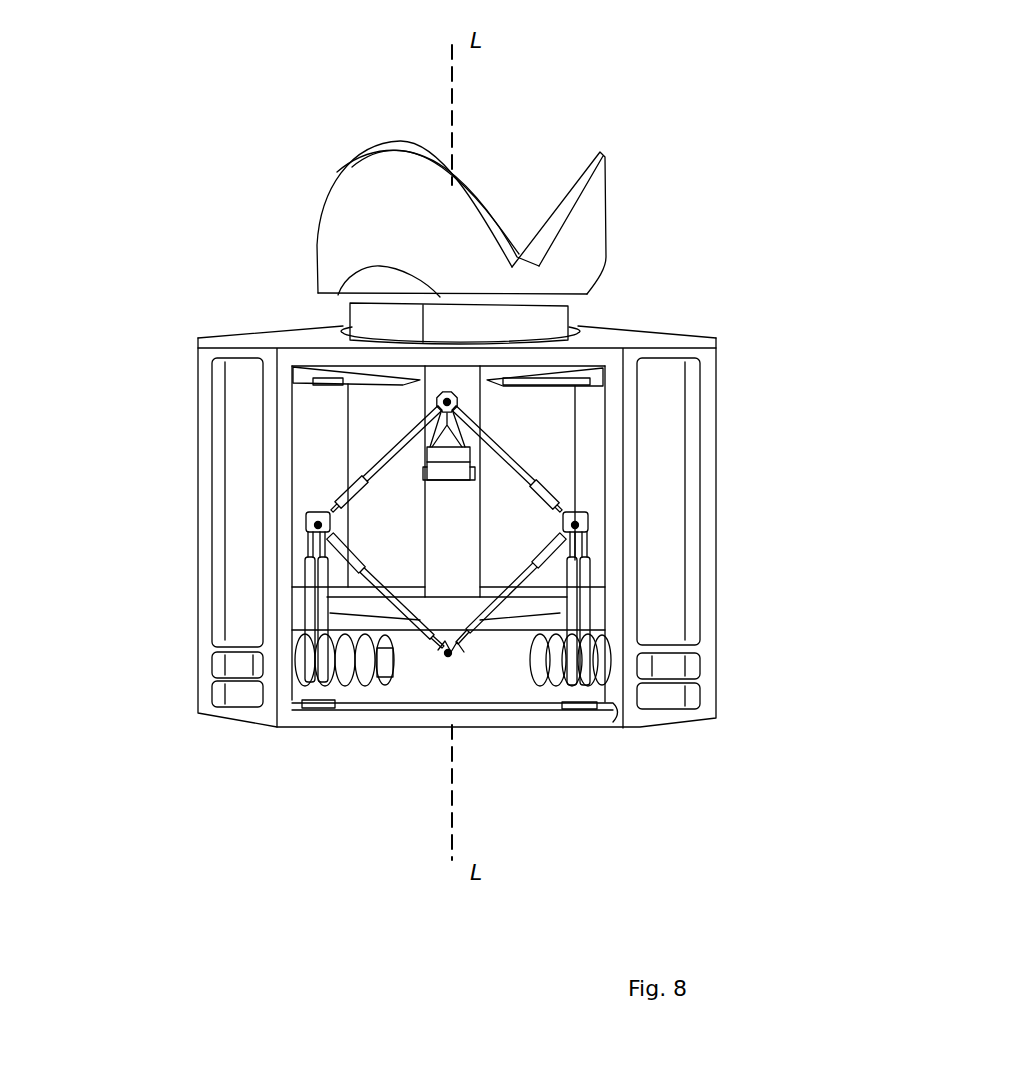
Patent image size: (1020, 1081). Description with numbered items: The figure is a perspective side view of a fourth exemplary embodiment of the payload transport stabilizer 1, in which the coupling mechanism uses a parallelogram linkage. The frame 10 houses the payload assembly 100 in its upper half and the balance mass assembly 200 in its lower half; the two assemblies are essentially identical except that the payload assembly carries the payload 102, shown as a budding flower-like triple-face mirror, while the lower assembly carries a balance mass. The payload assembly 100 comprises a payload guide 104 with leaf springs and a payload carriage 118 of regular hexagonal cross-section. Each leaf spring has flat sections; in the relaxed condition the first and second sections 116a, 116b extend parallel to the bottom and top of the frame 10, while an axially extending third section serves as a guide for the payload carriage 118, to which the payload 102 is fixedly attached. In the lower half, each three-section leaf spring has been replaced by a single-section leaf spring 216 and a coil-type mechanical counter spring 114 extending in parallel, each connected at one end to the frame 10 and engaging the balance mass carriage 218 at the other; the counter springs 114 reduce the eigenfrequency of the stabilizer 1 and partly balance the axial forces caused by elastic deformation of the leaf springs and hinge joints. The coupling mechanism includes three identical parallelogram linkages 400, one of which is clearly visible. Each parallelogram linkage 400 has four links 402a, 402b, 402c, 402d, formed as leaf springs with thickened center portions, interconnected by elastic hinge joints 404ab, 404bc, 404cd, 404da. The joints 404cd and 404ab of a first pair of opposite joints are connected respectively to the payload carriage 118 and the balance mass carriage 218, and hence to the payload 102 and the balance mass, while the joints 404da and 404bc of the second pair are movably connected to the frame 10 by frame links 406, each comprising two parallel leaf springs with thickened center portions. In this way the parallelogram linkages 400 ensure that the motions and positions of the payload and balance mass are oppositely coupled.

The payload transport stabilizer 1 is at (190, 106).
The frame 10 is at (706, 712).
The payload assembly 100 is at (564, 224).
The payload 102 is at (583, 218).
The payload guide 104 is at (314, 420).
The mechanical counter spring 114 is at (300, 697).
The first section of leaf spring 116a is at (343, 587).
The second section of leaf spring 116b is at (373, 408).
The payload carriage 118 is at (343, 382).
The balance mass assembly 200 is at (572, 752).
The single-section leaf spring 216 is at (353, 630).
The balance mass carriage 218 is at (407, 670).
The parallelogram linkage 400 is at (455, 600).
The link 402a is at (357, 567).
The link 402b is at (550, 553).
The link 402c is at (542, 490).
The link 402d is at (370, 472).
The elastic hinge joint 404ab is at (448, 653).
The elastic hinge joint 404bc is at (575, 525).
The elastic hinge joint 404cd is at (447, 402).
The elastic hinge joint 404da is at (318, 525).
The frame link 406 is at (308, 663).